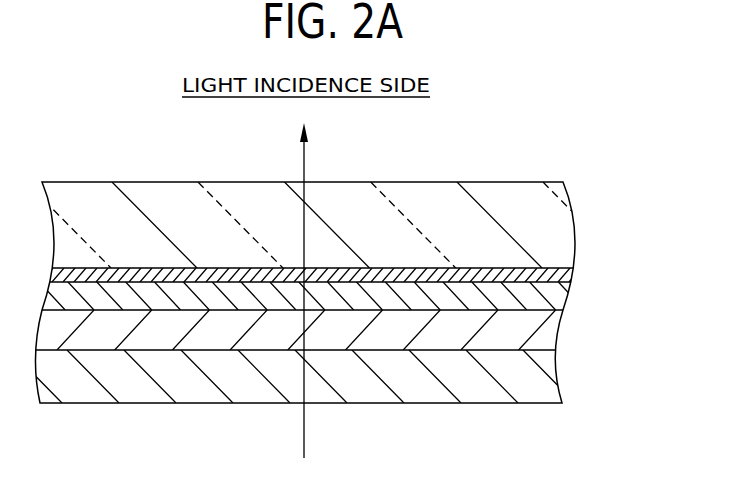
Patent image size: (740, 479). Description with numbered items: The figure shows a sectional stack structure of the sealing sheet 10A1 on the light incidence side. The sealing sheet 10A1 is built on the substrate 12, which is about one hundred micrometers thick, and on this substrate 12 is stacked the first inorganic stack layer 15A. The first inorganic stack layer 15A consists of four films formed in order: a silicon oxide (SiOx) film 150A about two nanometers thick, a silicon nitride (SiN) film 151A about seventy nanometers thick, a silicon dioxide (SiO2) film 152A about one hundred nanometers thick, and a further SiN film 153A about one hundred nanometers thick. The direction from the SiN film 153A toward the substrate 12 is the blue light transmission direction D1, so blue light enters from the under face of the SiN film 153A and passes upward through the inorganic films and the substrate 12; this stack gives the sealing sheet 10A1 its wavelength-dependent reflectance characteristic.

The sealing sheet 10A1 is at (575, 134).
The substrate 12 is at (563, 213).
The first inorganic stack layer 15A is at (363, 332).
The silicon oxide (SiOx) film 150A is at (565, 273).
The silicon nitride (SiN) film 151A is at (550, 296).
The silicon dioxide (SiO2) film 152A is at (550, 330).
The SiN film 153A is at (547, 373).
The blue light transmission direction D1 is at (304, 443).